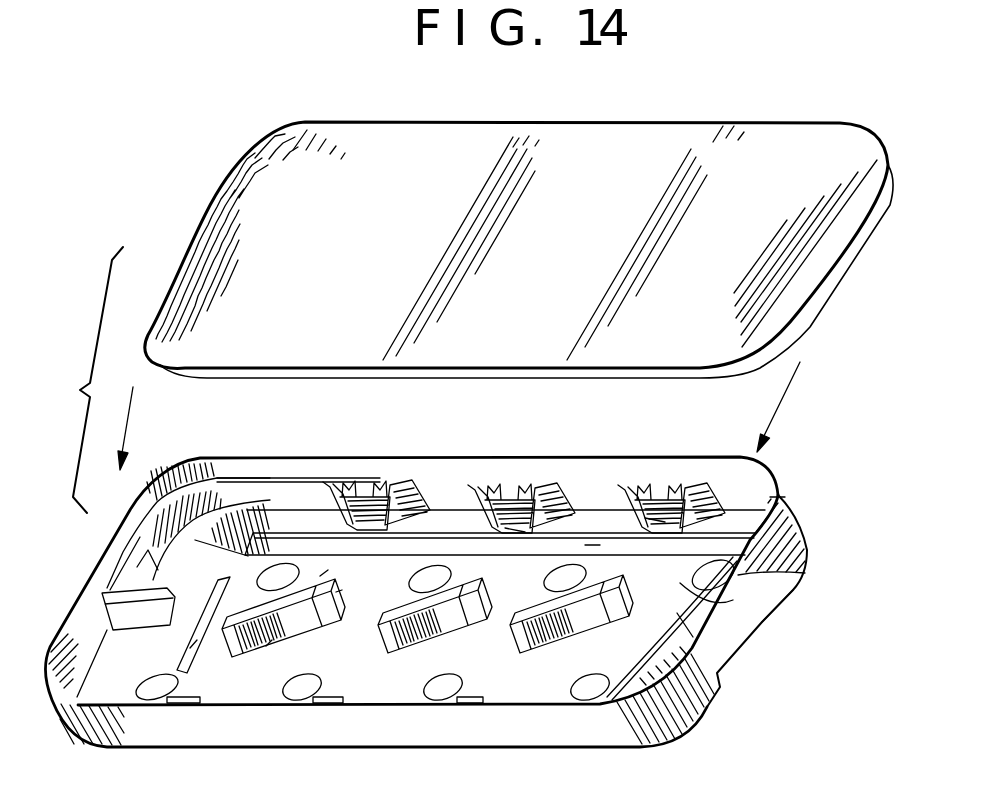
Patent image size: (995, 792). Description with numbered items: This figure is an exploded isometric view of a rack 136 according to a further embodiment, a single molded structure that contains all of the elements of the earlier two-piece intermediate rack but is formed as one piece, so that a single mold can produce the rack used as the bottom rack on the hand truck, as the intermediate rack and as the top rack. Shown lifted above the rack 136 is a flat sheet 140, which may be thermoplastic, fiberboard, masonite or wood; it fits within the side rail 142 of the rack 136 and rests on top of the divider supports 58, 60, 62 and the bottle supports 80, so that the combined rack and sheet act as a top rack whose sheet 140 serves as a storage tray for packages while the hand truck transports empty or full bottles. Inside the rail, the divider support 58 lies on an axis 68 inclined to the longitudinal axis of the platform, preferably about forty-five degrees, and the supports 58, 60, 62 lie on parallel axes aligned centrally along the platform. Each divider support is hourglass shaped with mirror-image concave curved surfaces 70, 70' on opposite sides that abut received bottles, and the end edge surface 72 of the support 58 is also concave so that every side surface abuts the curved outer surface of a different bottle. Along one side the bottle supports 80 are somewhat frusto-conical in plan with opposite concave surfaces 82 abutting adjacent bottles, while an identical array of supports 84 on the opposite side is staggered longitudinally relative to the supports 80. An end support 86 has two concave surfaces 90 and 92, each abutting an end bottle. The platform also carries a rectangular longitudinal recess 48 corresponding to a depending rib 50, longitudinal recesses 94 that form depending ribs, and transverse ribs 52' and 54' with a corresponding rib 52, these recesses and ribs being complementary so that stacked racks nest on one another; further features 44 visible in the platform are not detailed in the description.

The sheet 140 is at (565, 254).
The rack 136 is at (715, 721).
The side rail 142 is at (368, 748).
The concave surface 90 is at (243, 494).
The end support 86 is at (107, 613).
The end edge surface 72 is at (160, 609).
The concave surface 92 is at (192, 633).
The opening 52 is at (138, 687).
The rib 52' is at (222, 669).
The axis 68 is at (326, 556).
The concave surface 82 is at (413, 490).
The longitudinal recess 48 is at (592, 545).
The recess 44 is at (278, 573).
The longitudinal recess 94 is at (687, 581).
The bottle support 80 is at (516, 530).
The depending rib 50 is at (778, 497).
The divider support 58 is at (307, 624).
The divider support 60 is at (437, 628).
The divider support 62 is at (572, 632).
The concave curved surface 70 is at (318, 616).
The post 70' is at (362, 600).
The support 84 is at (334, 697).
The rib 54' is at (788, 618).